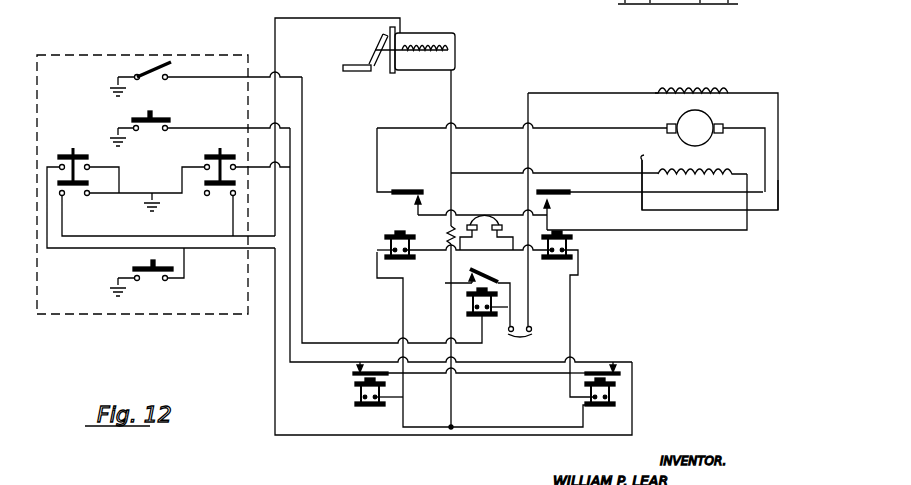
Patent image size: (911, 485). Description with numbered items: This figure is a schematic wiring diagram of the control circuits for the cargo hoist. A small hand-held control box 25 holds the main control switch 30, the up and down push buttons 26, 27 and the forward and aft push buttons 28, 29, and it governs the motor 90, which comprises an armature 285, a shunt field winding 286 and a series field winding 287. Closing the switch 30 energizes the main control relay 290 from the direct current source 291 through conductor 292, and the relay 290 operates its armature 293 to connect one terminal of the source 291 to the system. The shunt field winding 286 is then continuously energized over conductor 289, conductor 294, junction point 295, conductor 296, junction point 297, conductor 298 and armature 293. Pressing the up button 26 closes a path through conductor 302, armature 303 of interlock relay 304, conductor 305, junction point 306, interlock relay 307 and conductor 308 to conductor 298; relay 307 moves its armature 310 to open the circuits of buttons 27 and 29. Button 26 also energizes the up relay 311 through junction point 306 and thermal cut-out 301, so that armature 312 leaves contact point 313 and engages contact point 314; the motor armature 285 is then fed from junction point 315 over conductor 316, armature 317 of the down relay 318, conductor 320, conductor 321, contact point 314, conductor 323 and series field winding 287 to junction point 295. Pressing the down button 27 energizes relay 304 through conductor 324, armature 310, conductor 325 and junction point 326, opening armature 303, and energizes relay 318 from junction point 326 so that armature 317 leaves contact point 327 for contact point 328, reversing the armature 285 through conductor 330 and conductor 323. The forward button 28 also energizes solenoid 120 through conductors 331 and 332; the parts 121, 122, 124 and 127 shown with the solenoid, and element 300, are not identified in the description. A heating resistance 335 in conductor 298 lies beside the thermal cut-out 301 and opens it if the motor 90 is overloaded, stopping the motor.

The control box 25 is at (180, 320).
The up push button 26 is at (154, 111).
The down push button 27 is at (135, 268).
The forward push button 28 is at (213, 156).
The aft push button 29 is at (78, 130).
The main control switch 30 is at (153, 62).
The motor 90 is at (658, 191).
The solenoid 120 is at (433, 33).
The plunger 121 is at (394, 73).
The rod 122 is at (385, 55).
The arm 124 is at (369, 52).
The arm 127 is at (345, 71).
The motor armature 285 is at (678, 125).
The shunt field winding 286 is at (660, 90).
The series field winding 287 is at (725, 174).
The conductor 289 is at (529, 278).
The main control relay 290 is at (472, 307).
The source of direct current 291 is at (536, 341).
The conductor 292 is at (302, 184).
The armature 293 is at (484, 291).
The conductor 294 is at (778, 212).
The junction point 295 is at (643, 162).
The conductor 296 is at (617, 172).
The junction point 297 is at (455, 170).
The conductor 298 is at (470, 200).
The contact 300 is at (508, 307).
The thermal cut-out 301 is at (478, 235).
The conductor 302 is at (290, 303).
The armature 303 is at (377, 359).
The interlock relay 304 is at (357, 400).
The conductor 305 is at (452, 374).
The junction point 306 is at (590, 350).
The interlock relay 307 is at (612, 400).
The conductor 308 is at (555, 405).
The armature 310 is at (614, 360).
The up relay 311 is at (575, 252).
The armature 312 is at (585, 190).
The contact point 313 is at (537, 192).
The contact point 314 is at (553, 208).
The junction point 315 is at (540, 172).
The conductor 316 is at (495, 172).
The armature 317 is at (405, 190).
The down relay 318 is at (385, 246).
The conductor 320 is at (505, 128).
The conductor 321 is at (765, 146).
The conductor 323 is at (668, 232).
The conductor 324 is at (330, 437).
The conductor 325 is at (512, 365).
The junction point 326 is at (452, 348).
The contact point 327 is at (418, 190).
The contact point 328 is at (412, 210).
The conductor 330 is at (482, 209).
The conductor 331 is at (337, 118).
The conductor 332 is at (452, 76).
The heating resistance 335 is at (448, 238).